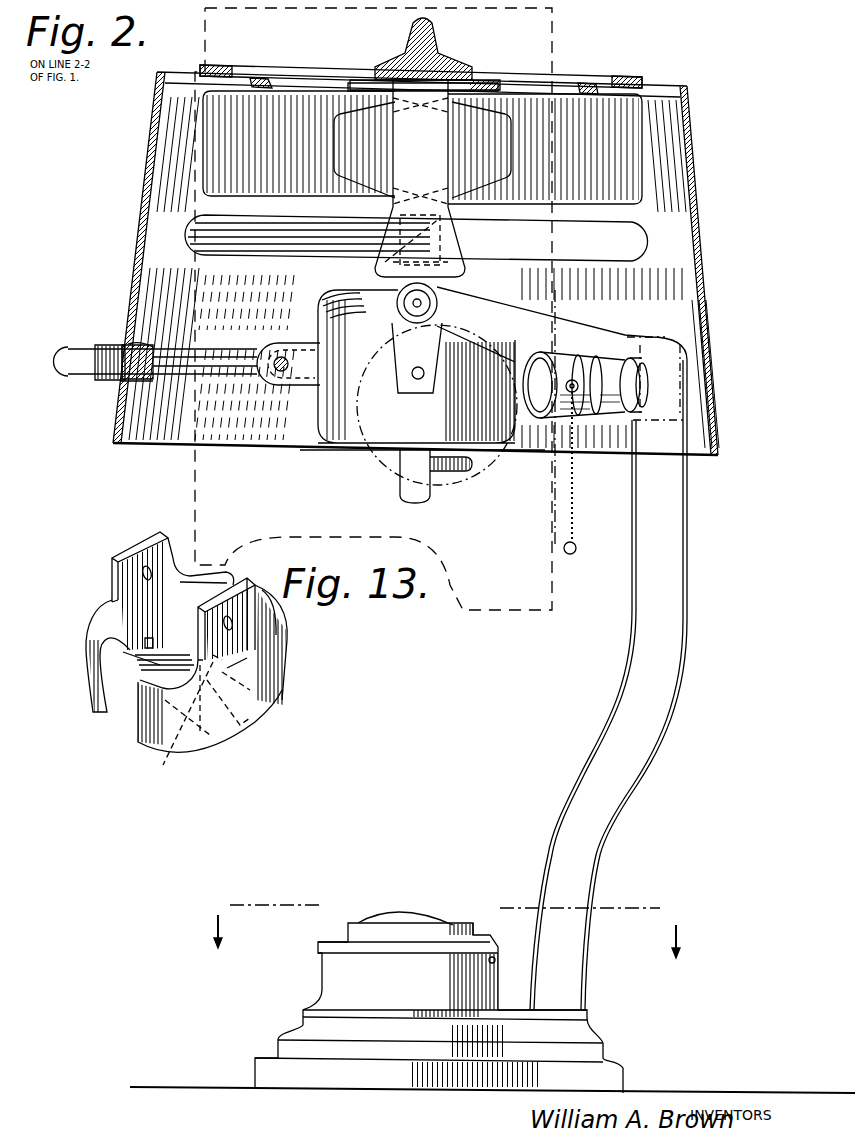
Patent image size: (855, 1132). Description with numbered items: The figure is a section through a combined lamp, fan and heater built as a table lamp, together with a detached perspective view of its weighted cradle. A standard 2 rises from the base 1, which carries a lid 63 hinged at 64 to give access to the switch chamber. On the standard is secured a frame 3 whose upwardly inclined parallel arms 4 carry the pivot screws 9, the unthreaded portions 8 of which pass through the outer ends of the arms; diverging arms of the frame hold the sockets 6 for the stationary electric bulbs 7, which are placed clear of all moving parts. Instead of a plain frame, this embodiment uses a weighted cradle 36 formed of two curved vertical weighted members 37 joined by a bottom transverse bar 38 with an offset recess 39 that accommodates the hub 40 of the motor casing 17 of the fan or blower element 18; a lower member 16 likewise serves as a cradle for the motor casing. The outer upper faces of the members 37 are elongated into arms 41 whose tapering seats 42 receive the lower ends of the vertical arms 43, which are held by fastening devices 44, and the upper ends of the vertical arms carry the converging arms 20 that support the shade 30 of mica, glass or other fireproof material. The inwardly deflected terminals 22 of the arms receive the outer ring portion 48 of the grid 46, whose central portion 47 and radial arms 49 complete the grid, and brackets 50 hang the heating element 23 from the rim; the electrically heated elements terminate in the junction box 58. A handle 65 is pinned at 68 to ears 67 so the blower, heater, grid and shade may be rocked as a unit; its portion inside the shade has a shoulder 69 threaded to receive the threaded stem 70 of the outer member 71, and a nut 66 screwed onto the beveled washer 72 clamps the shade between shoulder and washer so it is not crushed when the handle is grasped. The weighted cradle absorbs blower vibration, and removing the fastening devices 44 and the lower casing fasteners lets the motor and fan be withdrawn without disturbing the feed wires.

In FIG. 2, the base 1 is at (600, 1078).
In FIG. 2, the standard 2 is at (655, 695).
In FIG. 2, the frame 3 is at (660, 338).
In FIG. 2, the parallel arms 4 is at (200, 254).
In FIG. 2, the sockets 6 is at (615, 415).
In FIG. 2, the electric bulbs or lamps 7 is at (540, 418).
In FIG. 2, the unthreaded portions of the pivot screws 8 is at (444, 925).
In FIG. 2, the pivot screws 9 is at (398, 296).
In FIG. 2, the lower member 16 is at (450, 472).
In FIG. 2, the motor casing 17 is at (330, 296).
In FIG. 2, the fan or blower element 18 is at (416, 238).
In FIG. 2, the upwardly extending converging arms 20 is at (420, 178).
In FIG. 2, the inwardly deflected terminals 22 is at (488, 88).
In FIG. 2, the electric heating element 23 is at (645, 118).
In FIG. 2, the shade 30 is at (700, 195).
In FIG. 2, the cradle 36 is at (416, 370).
In FIG. 13, the cradle 36 is at (264, 696).
In FIG. 13, the curved vertical weighted members 37 is at (93, 690).
In FIG. 13, the bottom transverse bar 38 is at (150, 690).
In FIG. 13, the offset recess 39 is at (200, 725).
In FIG. 2, the hub 40 is at (400, 488).
In FIG. 13, the arms 41 is at (140, 587).
In FIG. 13, the bracket flange 42 is at (132, 560).
In FIG. 2, the vertical arms 43 is at (400, 342).
In FIG. 2, the fastening devices 44 is at (416, 380).
In FIG. 2, the outer grid member 46 is at (418, 49).
In FIG. 2, the central portion 47 is at (448, 78).
In FIG. 2, the outer ring portion 48 is at (308, 68).
In FIG. 2, the radial arms 49 is at (222, 66).
In FIG. 2, the brackets 50 is at (262, 78).
In FIG. 2, the junction box 58 is at (422, 150).
In FIG. 2, the lid 63 is at (400, 920).
In FIG. 2, the hinge 64 is at (495, 958).
In FIG. 2, the handle 65 is at (185, 376).
In FIG. 2, the nut 66 is at (108, 346).
In FIG. 2, the ears 67 is at (276, 372).
In FIG. 2, the pin 68 is at (270, 374).
In FIG. 2, the shoulder 69 is at (115, 405).
In FIG. 2, the threaded stem 70 is at (150, 350).
In FIG. 2, the outer member 71 is at (68, 366).
In FIG. 2, the beveled washer 72 is at (128, 343).